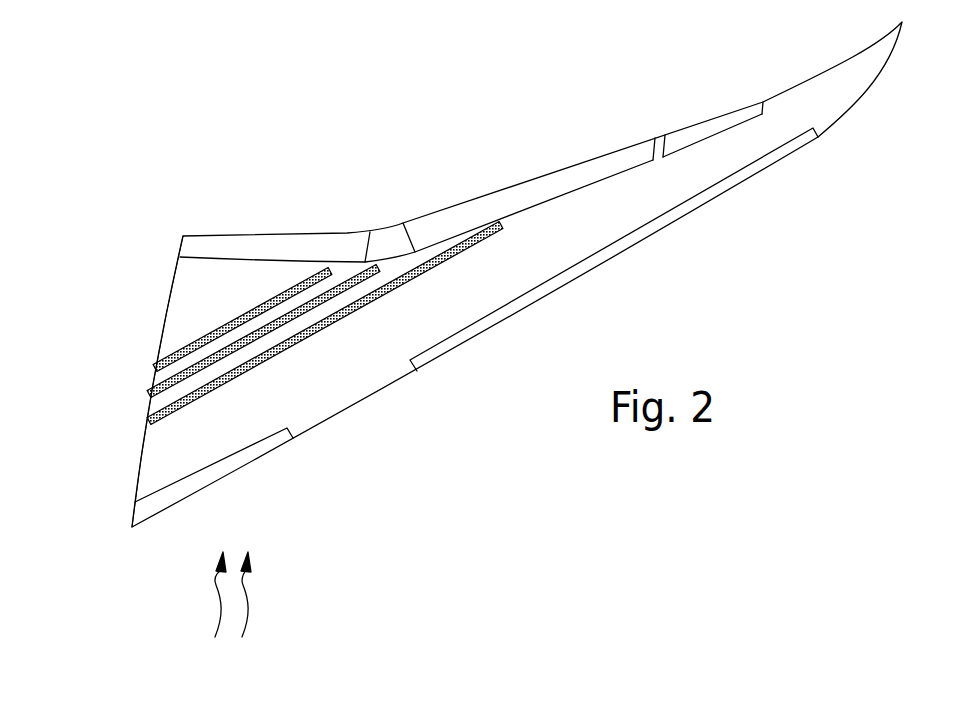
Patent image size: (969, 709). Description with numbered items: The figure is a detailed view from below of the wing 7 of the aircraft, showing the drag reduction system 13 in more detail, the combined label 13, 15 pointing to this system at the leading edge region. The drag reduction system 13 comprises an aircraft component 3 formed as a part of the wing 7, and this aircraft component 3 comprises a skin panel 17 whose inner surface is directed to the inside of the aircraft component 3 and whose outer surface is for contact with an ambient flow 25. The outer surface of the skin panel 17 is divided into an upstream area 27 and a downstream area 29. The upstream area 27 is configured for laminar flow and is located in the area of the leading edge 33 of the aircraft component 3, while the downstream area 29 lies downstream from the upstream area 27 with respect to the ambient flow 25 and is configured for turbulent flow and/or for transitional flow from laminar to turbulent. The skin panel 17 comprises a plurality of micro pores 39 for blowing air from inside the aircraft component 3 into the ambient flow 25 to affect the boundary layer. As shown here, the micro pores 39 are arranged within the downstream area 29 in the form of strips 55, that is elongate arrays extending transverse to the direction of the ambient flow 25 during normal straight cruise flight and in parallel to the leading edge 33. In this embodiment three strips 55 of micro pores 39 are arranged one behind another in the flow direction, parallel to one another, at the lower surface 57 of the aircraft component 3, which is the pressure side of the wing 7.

The aircraft component 3 is at (351, 383).
The wing 7 is at (609, 226).
The drag reduction system 13 is at (100, 381).
The leading edge region 15 is at (144, 363).
The skin panel 17 is at (165, 467).
The ambient flow 25 is at (246, 588).
The upstream area 27 is at (228, 450).
The downstream area 29 is at (178, 395).
The leading edge 33 is at (202, 496).
The micro pores 39 is at (325, 326).
The strips 55 is at (258, 312).
The lower surface 57 is at (181, 433).